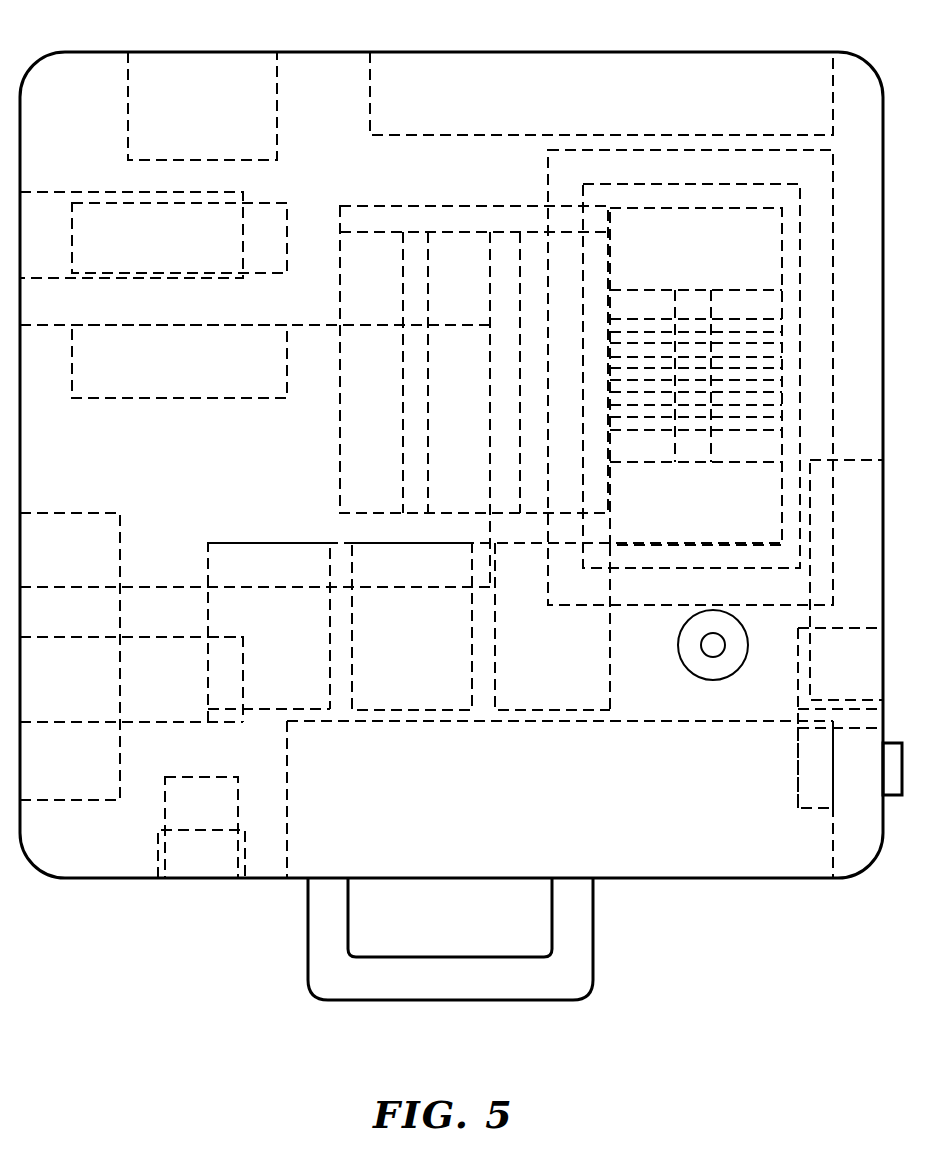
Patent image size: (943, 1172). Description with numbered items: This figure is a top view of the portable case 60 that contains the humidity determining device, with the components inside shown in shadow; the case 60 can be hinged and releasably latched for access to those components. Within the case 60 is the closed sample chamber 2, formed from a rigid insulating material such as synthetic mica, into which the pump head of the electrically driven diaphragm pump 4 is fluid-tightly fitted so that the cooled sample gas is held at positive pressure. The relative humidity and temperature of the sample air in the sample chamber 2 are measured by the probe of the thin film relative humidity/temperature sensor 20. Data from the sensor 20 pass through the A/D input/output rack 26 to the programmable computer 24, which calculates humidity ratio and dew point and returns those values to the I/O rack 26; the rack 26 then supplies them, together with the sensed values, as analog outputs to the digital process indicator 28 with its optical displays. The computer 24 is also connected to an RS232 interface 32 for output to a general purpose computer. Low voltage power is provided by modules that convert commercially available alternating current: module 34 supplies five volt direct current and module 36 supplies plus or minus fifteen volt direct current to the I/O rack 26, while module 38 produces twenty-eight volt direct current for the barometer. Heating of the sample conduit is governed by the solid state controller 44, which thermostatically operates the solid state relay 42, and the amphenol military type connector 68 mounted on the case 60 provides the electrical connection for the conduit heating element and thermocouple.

The sample chamber 2 is at (556, 172).
The diaphragm pump 4 is at (750, 345).
The relative humidity/temperature sensor 20 is at (191, 72).
The programmable computer 24 is at (470, 75).
The A/D input/output rack 26 is at (661, 835).
The digital process indicator 28 is at (50, 392).
The RS232 interface 32 is at (85, 775).
The power conversion module 34 is at (590, 693).
The power conversion module 36 is at (385, 683).
The power conversion module 38 is at (256, 548).
The solid state relay 42 is at (176, 830).
The solid state controller 44 is at (50, 205).
The case 60 is at (661, 52).
The amphenol military type connector 68 is at (893, 795).